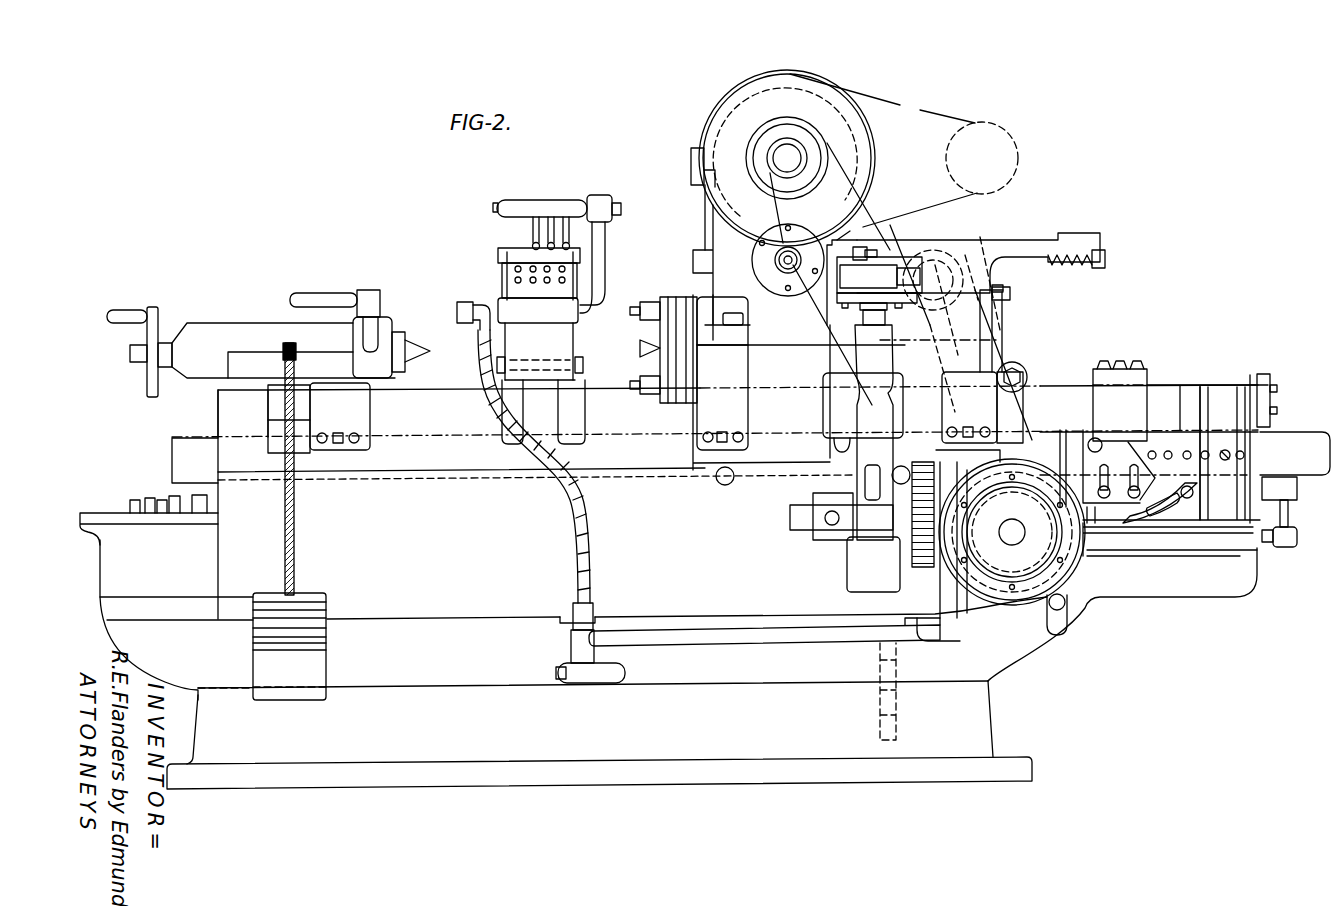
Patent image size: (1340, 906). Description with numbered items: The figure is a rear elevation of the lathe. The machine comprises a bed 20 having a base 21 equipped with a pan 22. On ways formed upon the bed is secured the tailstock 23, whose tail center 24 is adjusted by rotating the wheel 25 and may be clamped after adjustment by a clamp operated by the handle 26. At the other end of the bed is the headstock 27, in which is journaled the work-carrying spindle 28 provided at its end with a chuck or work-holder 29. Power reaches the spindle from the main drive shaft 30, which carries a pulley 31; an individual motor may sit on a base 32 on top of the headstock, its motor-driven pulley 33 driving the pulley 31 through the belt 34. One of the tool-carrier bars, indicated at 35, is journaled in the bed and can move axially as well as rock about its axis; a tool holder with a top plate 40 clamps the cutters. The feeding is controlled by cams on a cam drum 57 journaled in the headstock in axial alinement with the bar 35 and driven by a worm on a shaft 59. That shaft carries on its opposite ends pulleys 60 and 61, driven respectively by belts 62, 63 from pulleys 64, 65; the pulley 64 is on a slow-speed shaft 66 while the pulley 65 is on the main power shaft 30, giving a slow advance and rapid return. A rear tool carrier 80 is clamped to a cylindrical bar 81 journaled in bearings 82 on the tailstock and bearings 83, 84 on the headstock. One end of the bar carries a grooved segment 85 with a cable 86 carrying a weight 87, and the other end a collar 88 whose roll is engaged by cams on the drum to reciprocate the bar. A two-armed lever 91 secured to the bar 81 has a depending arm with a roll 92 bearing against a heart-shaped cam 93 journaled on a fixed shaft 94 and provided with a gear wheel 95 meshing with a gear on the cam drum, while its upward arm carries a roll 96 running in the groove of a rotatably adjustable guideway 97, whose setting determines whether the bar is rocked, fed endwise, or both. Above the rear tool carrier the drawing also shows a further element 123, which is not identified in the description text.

The bed 20 is at (495, 457).
The base 21 is at (712, 668).
The pan 22 is at (484, 658).
The tailstock 23 is at (350, 463).
The tail center 24 is at (408, 337).
The wheel 25 is at (158, 318).
The handle 26 is at (348, 290).
The headstock 27 is at (940, 299).
The work-carrying spindle 28 is at (1005, 337).
The chuck or work-holder 29 is at (675, 307).
The main drive shaft 30 is at (780, 163).
The pulley 31 is at (787, 75).
The base 32 is at (1070, 242).
The motor-driven pulley 33 is at (1012, 150).
The belt 34 is at (933, 107).
The bar 35 is at (471, 463).
The top plate 40 is at (580, 367).
The cam drum 57 is at (1148, 471).
The shaft 59 is at (1025, 535).
The pulley 60 is at (1020, 610).
The pulley 61 is at (1077, 590).
The belt 62 is at (973, 333).
The belt 63 is at (908, 280).
The pulley 64 is at (982, 237).
The pulley 65 is at (802, 137).
The shaft 66 is at (990, 260).
The rear tool carrier 80 is at (521, 371).
The cylindrical bar 81 is at (433, 397).
The bearings 82 is at (319, 418).
The bearing 83 is at (722, 373).
The bearing 84 is at (987, 366).
The grooved segment 85 is at (280, 422).
The cable 86 is at (293, 510).
The weight 87 is at (307, 627).
The collar 88 is at (1110, 380).
The two-armed lever 91 is at (870, 402).
The roll 92 is at (873, 510).
The heart-shaped cam 93 is at (855, 555).
The fixed shaft 94 is at (817, 520).
The gear wheel 95 is at (922, 563).
The roll 96 is at (862, 325).
The rotatably adjustable guideway 97 is at (937, 260).
The oil manifold 123 is at (508, 257).